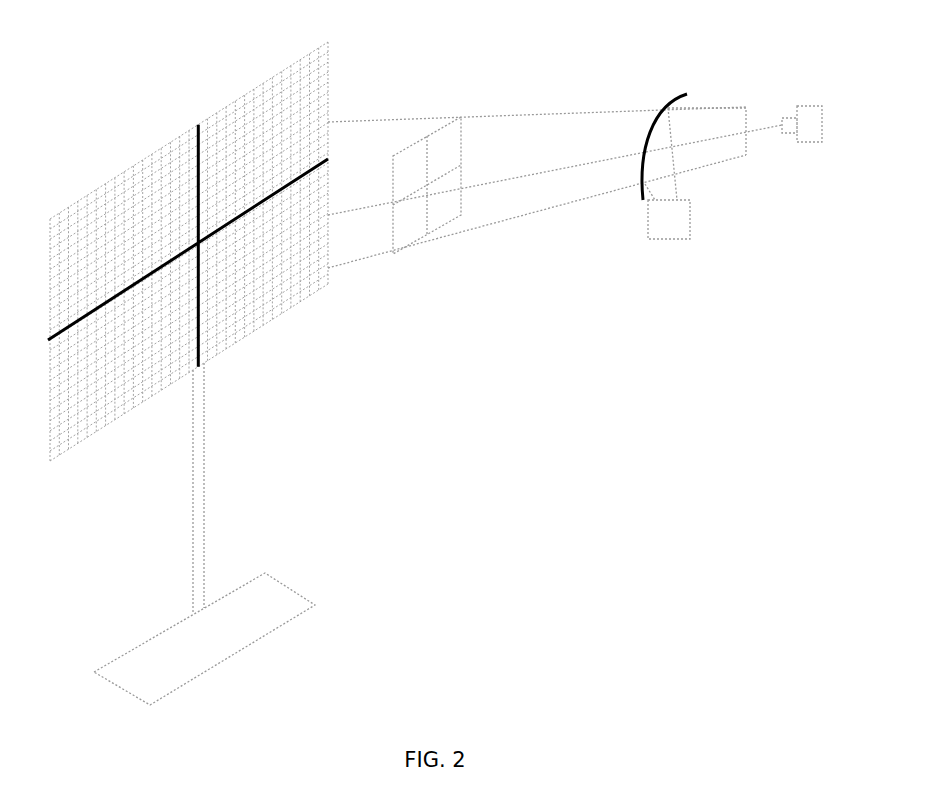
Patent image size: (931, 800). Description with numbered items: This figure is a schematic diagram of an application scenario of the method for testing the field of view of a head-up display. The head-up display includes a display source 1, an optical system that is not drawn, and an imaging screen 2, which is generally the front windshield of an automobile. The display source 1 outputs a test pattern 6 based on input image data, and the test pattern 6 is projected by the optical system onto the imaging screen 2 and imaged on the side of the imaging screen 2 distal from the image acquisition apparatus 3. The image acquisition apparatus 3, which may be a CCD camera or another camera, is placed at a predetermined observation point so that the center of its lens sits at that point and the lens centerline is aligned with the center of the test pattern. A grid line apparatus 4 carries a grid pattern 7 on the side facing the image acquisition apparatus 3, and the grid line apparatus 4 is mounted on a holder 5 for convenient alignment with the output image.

The display source 1 is at (690, 228).
The imaging screen 2 is at (677, 95).
The image acquisition apparatus 3 is at (816, 107).
The grid line apparatus 4 is at (271, 317).
The holder 5 is at (203, 447).
The test pattern 6 is at (427, 136).
The grid pattern 7 is at (318, 132).